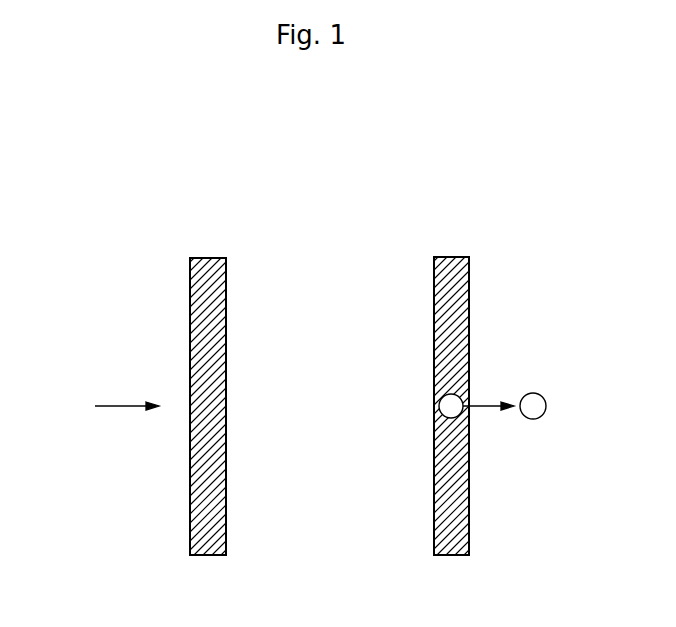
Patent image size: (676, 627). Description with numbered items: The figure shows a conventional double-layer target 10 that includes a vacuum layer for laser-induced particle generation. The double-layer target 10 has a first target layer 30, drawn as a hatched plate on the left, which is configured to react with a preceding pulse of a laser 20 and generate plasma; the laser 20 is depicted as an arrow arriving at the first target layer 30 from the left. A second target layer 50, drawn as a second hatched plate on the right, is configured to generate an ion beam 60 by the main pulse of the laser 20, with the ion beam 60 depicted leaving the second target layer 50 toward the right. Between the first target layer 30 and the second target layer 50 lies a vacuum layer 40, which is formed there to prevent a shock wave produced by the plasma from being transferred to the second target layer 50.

The double-layer target 10 is at (282, 149).
The laser 20 is at (115, 406).
The first target layer 30 is at (203, 267).
The vacuum layer 40 is at (322, 293).
The second target layer 50 is at (452, 267).
The ion beam 60 is at (487, 404).